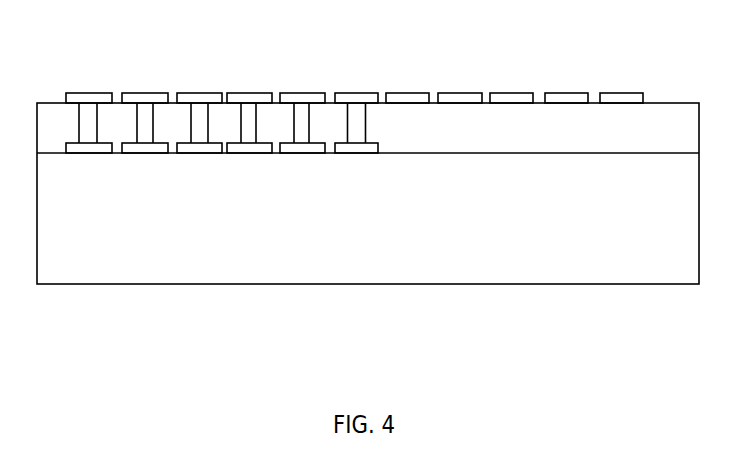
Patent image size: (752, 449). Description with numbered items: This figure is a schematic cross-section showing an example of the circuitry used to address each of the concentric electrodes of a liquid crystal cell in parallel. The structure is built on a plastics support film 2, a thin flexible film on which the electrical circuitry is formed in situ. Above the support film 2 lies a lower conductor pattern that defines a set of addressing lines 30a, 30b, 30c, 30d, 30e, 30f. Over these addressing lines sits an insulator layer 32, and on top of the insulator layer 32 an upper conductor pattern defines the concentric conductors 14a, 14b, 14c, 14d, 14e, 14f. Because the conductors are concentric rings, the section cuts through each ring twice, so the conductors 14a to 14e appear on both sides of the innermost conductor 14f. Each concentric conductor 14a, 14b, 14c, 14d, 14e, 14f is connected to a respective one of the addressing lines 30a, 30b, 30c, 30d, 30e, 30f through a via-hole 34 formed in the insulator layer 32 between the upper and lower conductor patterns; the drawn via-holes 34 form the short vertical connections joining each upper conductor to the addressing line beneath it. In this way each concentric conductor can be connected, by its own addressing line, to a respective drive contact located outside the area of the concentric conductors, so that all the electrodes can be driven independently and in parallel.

The plastics support film 2 is at (475, 245).
The insulating layer 32 is at (610, 138).
The via-hole 34 is at (365, 121).
The concentric conductor 14a is at (88, 100).
The concentric conductor 14b is at (145, 100).
The concentric conductor 14c is at (197, 100).
The concentric conductor 14d is at (248, 100).
The concentric conductor 14e is at (302, 100).
The concentric conductor 14f is at (355, 100).
The addressing line 30a is at (88, 148).
The addressing line 30b is at (142, 148).
The addressing line 30c is at (198, 148).
The addressing line 30d is at (248, 150).
The addressing line 30e is at (302, 150).
The addressing line 30f is at (355, 150).